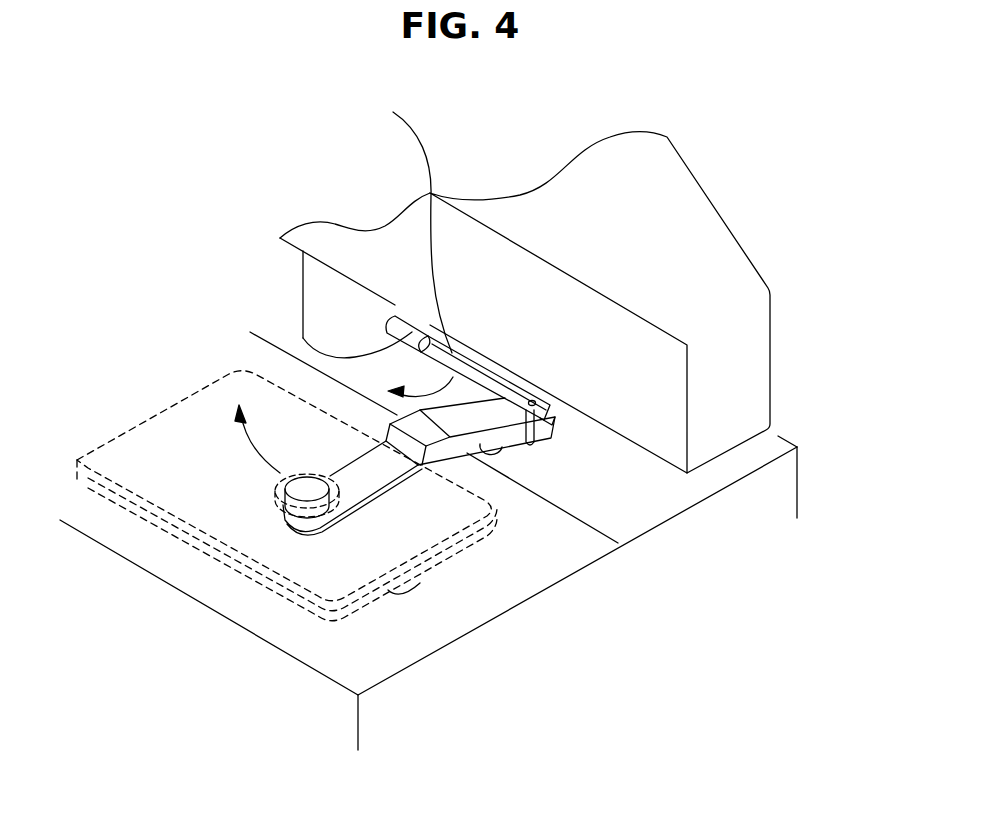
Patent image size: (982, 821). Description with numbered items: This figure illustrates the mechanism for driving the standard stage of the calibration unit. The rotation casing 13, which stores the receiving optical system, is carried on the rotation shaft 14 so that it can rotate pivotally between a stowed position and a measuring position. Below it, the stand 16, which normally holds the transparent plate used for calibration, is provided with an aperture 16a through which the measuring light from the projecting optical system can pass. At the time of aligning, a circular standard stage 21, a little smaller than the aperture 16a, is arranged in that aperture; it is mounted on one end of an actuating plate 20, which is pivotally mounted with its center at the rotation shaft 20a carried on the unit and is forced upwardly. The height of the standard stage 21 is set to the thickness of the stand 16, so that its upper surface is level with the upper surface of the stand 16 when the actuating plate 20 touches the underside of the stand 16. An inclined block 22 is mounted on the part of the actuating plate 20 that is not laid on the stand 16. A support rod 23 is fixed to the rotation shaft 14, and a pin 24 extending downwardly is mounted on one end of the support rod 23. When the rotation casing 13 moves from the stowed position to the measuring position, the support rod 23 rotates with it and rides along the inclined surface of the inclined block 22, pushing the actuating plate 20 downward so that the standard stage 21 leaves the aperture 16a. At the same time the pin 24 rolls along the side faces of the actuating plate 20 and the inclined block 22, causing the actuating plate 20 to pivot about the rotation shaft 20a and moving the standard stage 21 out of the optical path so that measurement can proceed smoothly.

The rotation casing 13 is at (717, 245).
The rotation shaft 14 is at (325, 310).
The stand 16 is at (160, 430).
The aperture 16a is at (282, 475).
The actuating plate 20 is at (367, 482).
The rotation shaft 20a is at (503, 447).
The standard stage 21 is at (307, 487).
The inclined block 22 is at (470, 416).
The support rod 23 is at (400, 218).
The pin 24 is at (535, 432).